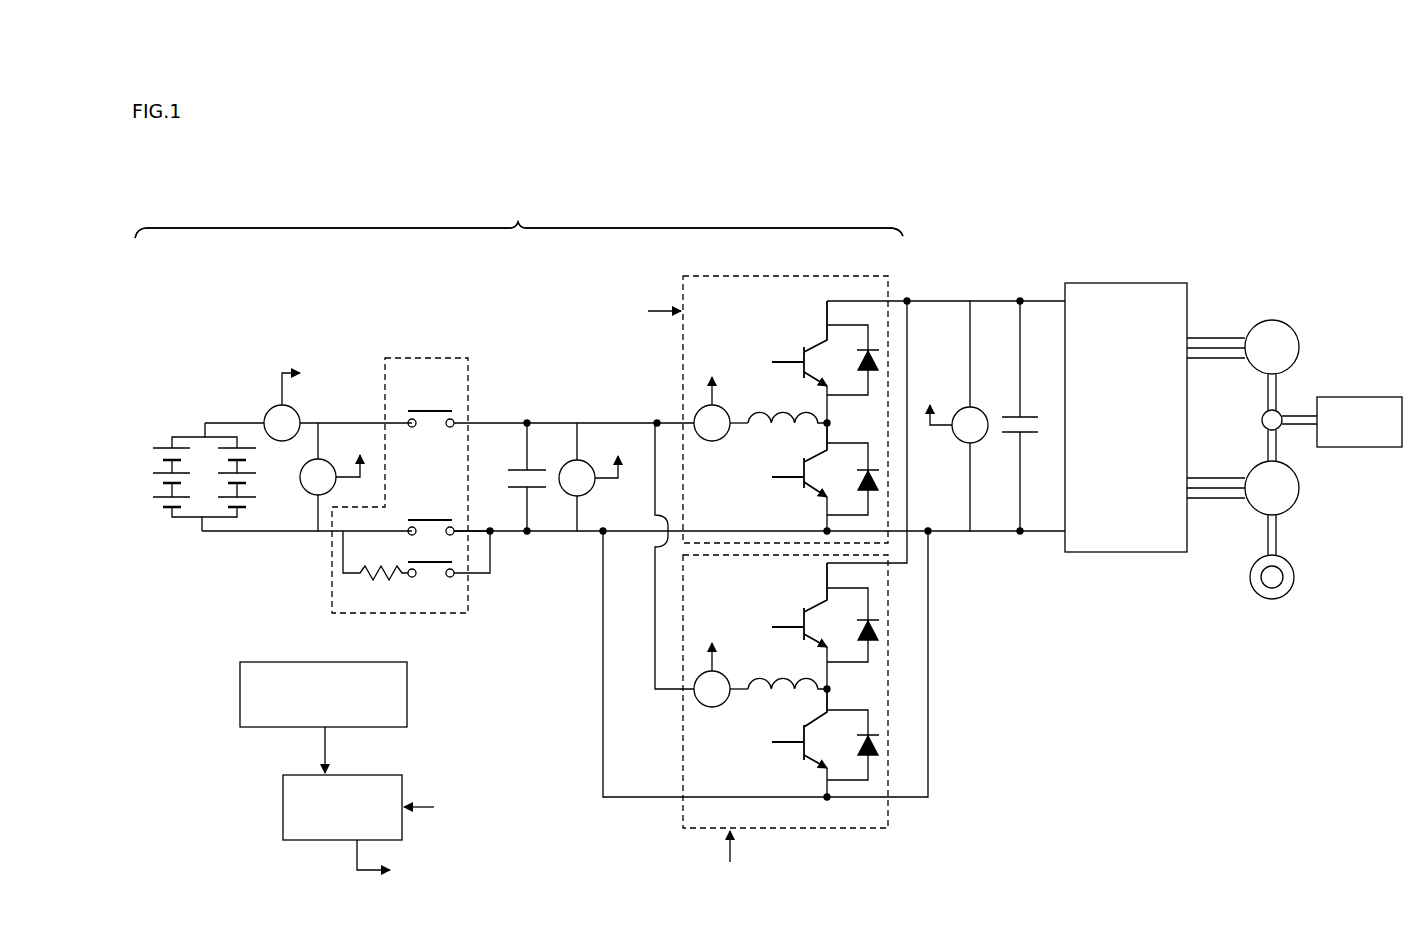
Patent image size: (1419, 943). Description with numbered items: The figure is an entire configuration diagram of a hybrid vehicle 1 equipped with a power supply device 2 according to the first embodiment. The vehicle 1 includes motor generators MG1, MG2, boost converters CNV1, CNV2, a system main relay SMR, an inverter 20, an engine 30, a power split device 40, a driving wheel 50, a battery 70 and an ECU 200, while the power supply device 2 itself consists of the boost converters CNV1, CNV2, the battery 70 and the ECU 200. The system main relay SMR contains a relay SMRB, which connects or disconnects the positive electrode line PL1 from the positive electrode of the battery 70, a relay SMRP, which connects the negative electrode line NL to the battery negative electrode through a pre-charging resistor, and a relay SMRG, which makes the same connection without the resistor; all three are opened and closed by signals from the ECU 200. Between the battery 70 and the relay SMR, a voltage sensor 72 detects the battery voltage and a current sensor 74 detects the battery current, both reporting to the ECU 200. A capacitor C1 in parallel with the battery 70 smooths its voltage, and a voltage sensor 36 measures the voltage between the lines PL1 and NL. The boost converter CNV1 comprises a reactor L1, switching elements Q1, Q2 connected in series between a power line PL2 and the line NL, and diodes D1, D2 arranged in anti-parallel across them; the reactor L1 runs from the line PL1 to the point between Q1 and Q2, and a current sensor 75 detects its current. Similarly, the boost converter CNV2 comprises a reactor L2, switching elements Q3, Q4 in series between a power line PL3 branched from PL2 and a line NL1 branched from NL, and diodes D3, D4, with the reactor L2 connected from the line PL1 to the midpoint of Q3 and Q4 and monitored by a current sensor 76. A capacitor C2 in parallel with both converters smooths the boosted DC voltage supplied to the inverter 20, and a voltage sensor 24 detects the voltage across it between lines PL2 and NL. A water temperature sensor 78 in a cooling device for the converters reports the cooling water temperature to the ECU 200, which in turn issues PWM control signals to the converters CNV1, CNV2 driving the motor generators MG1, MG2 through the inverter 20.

The hybrid vehicle 1 is at (190, 196).
The power supply device 2 is at (519, 218).
The inverter 20 is at (1125, 283).
The voltage sensor 24 is at (985, 440).
The engine 30 is at (1365, 397).
The voltage sensor 36 is at (590, 494).
The power split device 40 is at (1261, 420).
The driving wheel 50 is at (1296, 577).
The battery 70 is at (178, 416).
The voltage sensor 72 is at (306, 487).
The current sensor 74 is at (266, 412).
The current sensor 75 is at (712, 441).
The current sensor 76 is at (712, 707).
The water temperature sensor 78 is at (240, 697).
The ECU 200 is at (345, 775).
The system main relay SMR is at (425, 358).
The relay SMRB is at (448, 400).
The relay SMRG is at (450, 545).
The relay SMRP is at (424, 588).
The positive electrode line PL1 is at (490, 423).
The power line PL2 is at (940, 301).
The power line PL3 is at (908, 580).
The negative electrode line NL is at (497, 533).
The power line NL1 is at (930, 770).
The capacitor C1 is at (546, 498).
The capacitor C2 is at (1030, 442).
The reactor L1 is at (775, 432).
The reactor L2 is at (775, 698).
The switching element Q1 is at (799, 362).
The switching element Q2 is at (799, 477).
The switching element Q3 is at (799, 626).
The switching element Q4 is at (799, 743).
The diode D1 is at (853, 360).
The diode D2 is at (853, 479).
The diode D3 is at (853, 625).
The diode D4 is at (853, 745).
The boost converter CNV1 is at (822, 276).
The boost converter CNV2 is at (820, 830).
The motor generator MG1 is at (1243, 347).
The motor generator MG2 is at (1243, 488).